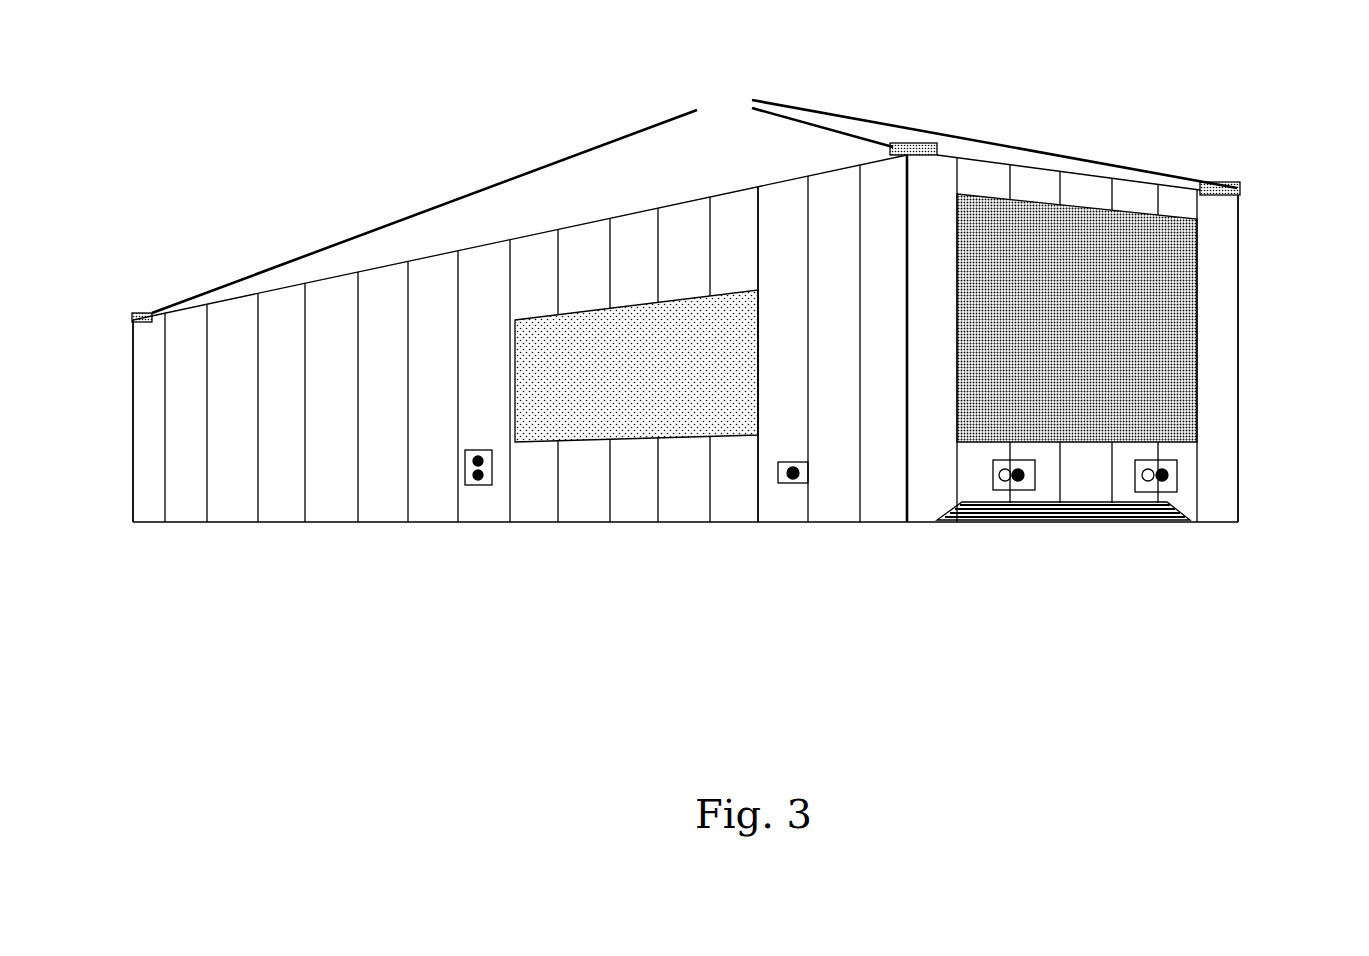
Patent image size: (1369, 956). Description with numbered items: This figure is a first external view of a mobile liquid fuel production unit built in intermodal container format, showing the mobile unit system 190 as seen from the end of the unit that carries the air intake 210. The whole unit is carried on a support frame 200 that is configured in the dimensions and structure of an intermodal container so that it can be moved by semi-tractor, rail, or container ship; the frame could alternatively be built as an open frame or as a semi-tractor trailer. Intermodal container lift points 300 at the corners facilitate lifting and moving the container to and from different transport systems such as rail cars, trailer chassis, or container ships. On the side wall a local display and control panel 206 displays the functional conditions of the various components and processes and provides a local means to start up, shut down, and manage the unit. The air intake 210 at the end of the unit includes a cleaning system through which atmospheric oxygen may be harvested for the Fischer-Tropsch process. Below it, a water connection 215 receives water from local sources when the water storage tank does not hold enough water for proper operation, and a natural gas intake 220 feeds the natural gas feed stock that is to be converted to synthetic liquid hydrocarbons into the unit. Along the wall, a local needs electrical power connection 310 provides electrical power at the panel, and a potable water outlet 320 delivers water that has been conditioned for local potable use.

The mobile unit system 190 is at (318, 272).
The support frame 200 is at (405, 262).
The local display and control panel 206 is at (585, 313).
The air intake 210 is at (1197, 332).
The water connection 215 is at (1007, 492).
The natural gas intake 220 is at (1148, 487).
The intermodal container lift points 300 is at (969, 142).
The local needs electrical power connection 310 is at (473, 487).
The potable water outlet 320 is at (788, 485).